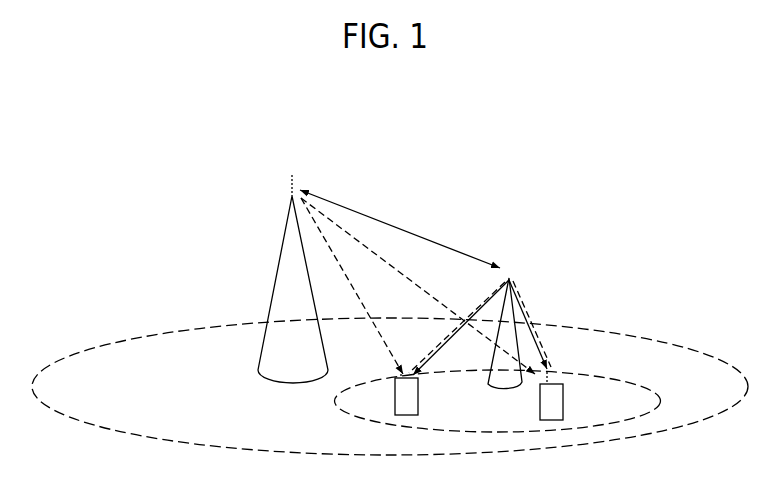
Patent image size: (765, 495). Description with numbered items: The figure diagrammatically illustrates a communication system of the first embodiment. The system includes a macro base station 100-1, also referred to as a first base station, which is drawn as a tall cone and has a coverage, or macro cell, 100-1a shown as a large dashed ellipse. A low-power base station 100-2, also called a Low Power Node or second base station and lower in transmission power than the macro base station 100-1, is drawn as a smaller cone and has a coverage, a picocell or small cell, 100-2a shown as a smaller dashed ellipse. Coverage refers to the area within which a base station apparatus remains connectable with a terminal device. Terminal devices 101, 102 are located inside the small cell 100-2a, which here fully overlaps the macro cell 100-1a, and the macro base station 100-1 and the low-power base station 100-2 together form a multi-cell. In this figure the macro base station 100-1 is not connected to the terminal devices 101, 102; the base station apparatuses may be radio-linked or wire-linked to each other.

The macro base station 100-1 is at (277, 272).
The coverage (macro cell) 100-1a is at (97, 425).
The low-power base station 100-2 is at (537, 279).
The coverage (picocell or small cell) 100-2a is at (645, 387).
The terminal device 101 is at (418, 400).
The terminal device 102 is at (563, 402).